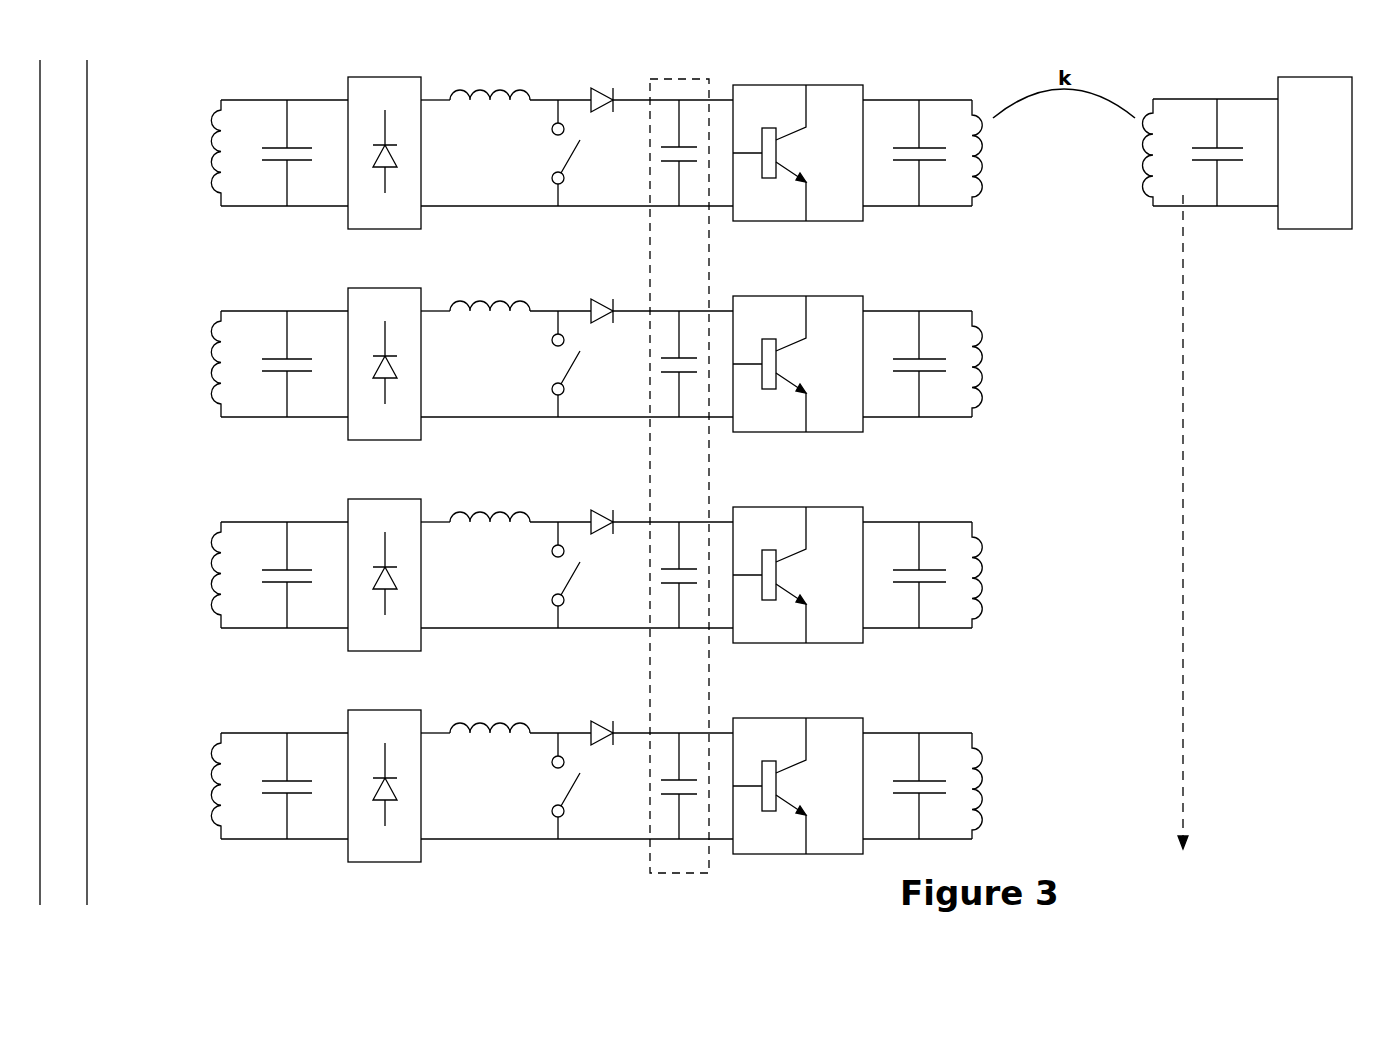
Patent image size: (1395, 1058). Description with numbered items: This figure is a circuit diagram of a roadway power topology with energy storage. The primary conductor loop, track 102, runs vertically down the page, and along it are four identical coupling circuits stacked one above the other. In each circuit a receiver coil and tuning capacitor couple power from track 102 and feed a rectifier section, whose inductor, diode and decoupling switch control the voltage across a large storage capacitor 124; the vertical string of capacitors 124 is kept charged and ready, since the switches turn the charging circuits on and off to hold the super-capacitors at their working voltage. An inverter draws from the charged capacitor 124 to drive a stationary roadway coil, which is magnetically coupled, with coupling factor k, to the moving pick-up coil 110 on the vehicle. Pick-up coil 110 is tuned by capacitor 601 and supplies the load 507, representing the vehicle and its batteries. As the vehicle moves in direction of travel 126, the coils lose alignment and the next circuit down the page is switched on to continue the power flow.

The track 102 is at (87, 863).
The capacitor 124 is at (687, 873).
The pick-up coil 110 is at (1140, 165).
The receiver capacitor 601 is at (1228, 148).
The load 507 is at (1340, 77).
The direction of travel 126 is at (1183, 793).